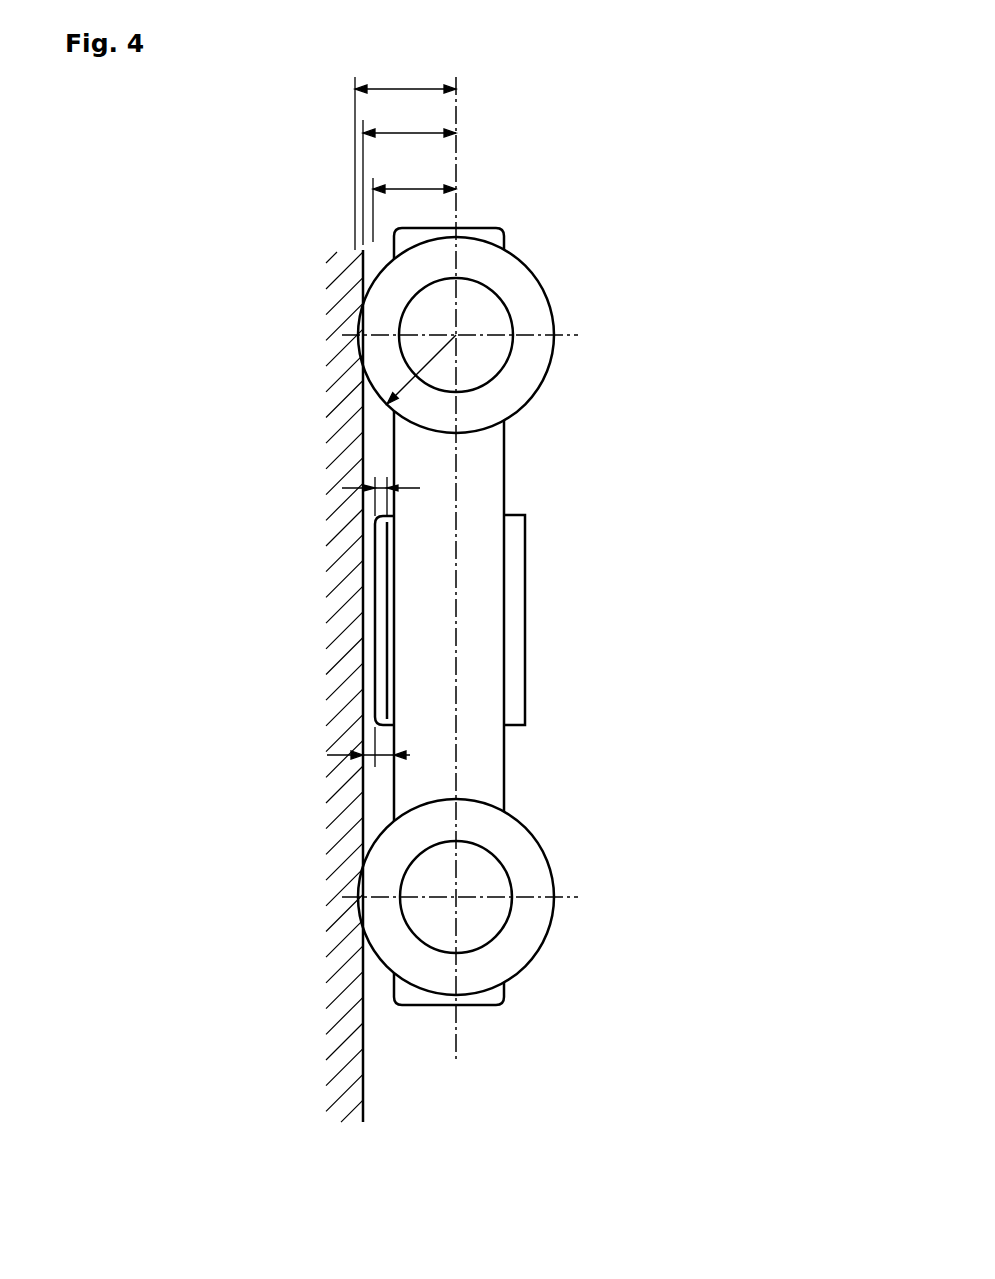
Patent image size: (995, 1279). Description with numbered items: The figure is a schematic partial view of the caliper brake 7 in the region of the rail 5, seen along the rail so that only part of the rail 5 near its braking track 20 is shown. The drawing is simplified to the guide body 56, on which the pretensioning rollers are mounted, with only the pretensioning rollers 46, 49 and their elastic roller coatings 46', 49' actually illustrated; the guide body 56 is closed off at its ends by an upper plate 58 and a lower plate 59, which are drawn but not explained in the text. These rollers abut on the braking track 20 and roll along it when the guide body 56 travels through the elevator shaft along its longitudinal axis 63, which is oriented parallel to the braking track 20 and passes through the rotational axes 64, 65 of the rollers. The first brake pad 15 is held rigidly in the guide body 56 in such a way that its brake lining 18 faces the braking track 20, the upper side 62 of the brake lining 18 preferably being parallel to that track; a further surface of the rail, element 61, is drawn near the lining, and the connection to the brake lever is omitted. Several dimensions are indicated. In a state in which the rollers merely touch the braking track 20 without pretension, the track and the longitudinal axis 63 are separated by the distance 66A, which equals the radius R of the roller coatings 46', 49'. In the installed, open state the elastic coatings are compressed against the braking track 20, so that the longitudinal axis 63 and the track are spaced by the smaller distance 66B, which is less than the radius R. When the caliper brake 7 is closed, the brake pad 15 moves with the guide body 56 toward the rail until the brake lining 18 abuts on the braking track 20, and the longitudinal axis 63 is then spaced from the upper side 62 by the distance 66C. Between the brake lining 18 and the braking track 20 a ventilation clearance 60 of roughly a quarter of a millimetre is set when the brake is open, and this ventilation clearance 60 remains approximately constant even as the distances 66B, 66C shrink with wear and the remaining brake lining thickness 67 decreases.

The rail 5 is at (342, 1030).
The caliper brake 7 is at (645, 198).
The first brake pad 15 is at (515, 638).
The brake lining 18 is at (382, 543).
The braking track 20 is at (383, 1070).
The pretensioning roller 46 is at (518, 314).
The elastic roller coating 46' is at (501, 335).
The pretensioning roller 49 is at (518, 872).
The elastic roller coating 49' is at (501, 897).
The guide body 56 is at (483, 467).
The upper cover plate 58 is at (493, 236).
The lower cover plate 59 is at (497, 994).
The ventilation clearance 60 is at (370, 760).
The contact surface of guide rail 61 is at (370, 613).
The upper side of the brake lining 62 is at (374, 670).
The longitudinal axis 63 is at (457, 682).
The rotational axis 64 is at (456, 337).
The rotational axis 65 is at (456, 897).
The distance 66A is at (410, 90).
The distance 66B is at (408, 133).
The distance 66C is at (413, 189).
The brake lining thickness 67 is at (383, 480).
The radius R is at (390, 374).